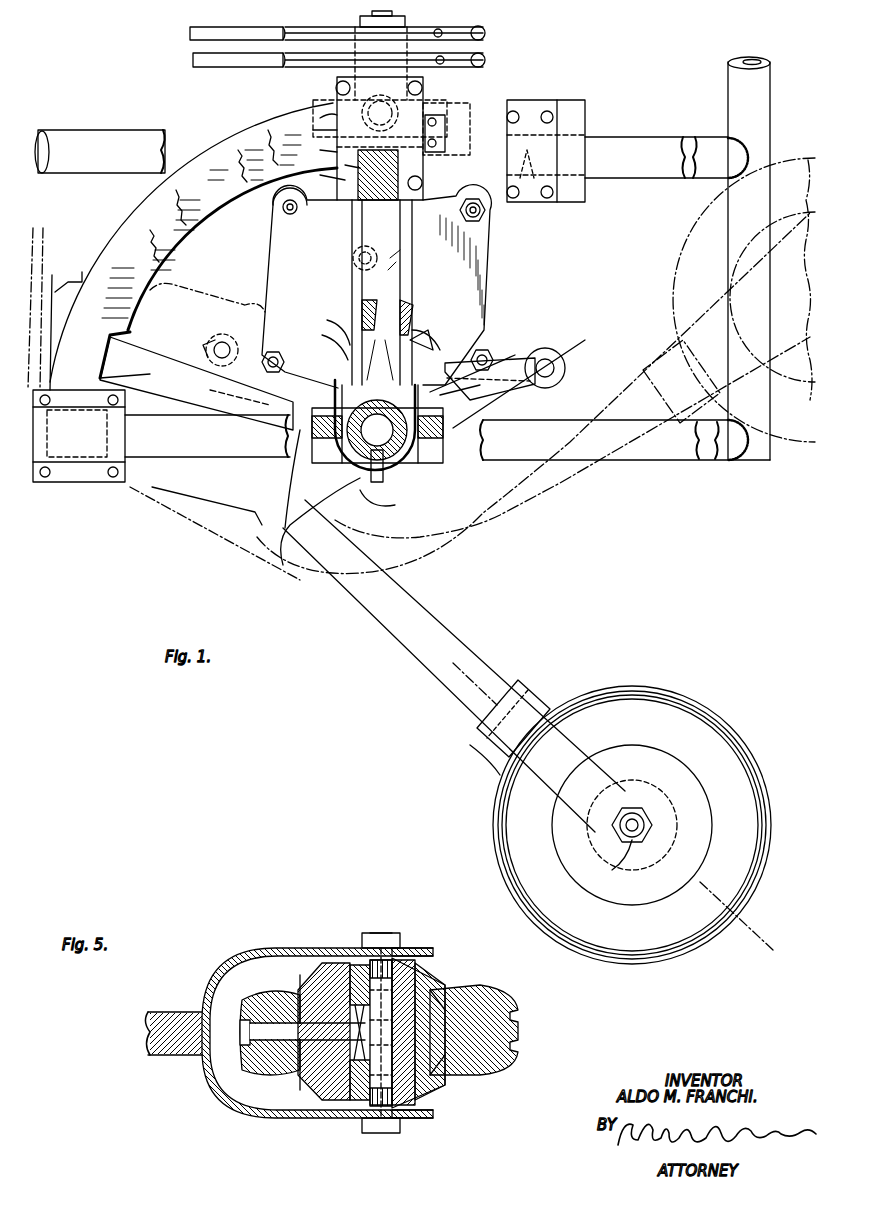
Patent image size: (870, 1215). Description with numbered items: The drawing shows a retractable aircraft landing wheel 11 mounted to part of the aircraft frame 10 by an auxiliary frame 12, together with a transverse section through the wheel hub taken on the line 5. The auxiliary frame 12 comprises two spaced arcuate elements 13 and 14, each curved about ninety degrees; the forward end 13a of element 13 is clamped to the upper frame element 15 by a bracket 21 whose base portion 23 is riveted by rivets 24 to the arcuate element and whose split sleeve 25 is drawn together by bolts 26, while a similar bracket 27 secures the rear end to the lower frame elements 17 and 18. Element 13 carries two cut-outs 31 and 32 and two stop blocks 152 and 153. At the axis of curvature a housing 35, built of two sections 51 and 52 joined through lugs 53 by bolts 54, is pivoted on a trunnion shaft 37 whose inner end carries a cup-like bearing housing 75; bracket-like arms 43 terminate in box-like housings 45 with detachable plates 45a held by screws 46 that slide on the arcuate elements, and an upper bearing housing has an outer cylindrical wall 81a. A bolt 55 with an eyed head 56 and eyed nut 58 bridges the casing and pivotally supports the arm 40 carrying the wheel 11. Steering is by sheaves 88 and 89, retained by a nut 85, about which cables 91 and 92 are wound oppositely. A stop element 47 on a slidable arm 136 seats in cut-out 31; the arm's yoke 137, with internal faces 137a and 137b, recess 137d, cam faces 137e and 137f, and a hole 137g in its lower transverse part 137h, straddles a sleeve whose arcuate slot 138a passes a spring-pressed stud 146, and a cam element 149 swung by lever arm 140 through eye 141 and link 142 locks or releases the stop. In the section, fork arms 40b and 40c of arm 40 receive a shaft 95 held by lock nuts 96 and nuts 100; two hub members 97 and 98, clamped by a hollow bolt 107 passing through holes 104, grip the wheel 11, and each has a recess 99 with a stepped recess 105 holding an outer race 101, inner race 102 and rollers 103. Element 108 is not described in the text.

In FIG. 1, the frame 10 is at (670, 466).
In FIG. 1, the wheel 11 is at (805, 440).
In FIG. 5, the wheel 11 is at (522, 1012).
In FIG. 1, the auxiliary frame 12 is at (134, 205).
In FIG. 1, the arcuate frame element 13 is at (242, 150).
In FIG. 1, the forward end of frame element 13 13a is at (562, 120).
In FIG. 1, the arcuate frame element 14 is at (200, 165).
In FIG. 1, the upper frame element 15 is at (98, 140).
In FIG. 1, the lower frame element 17 is at (176, 467).
In FIG. 1, the lower frame element 18 is at (694, 140).
In FIG. 1, the bracket 21 is at (515, 107).
In FIG. 1, the base portion 23 is at (548, 115).
In FIG. 1, the rivets 24 is at (560, 58).
In FIG. 1, the split sleeve 25 is at (128, 433).
In FIG. 1, the bolts 26 is at (553, 117).
In FIG. 1, the bracket 27 is at (80, 485).
In FIG. 1, the cut-out 31 is at (347, 166).
In FIG. 1, the cut-out 32 is at (108, 352).
In FIG. 1, the housing 35 is at (482, 276).
In FIG. 1, the trunnion shaft 37 is at (340, 365).
In FIG. 1, the arm 40 is at (430, 680).
In FIG. 5, the arm 40 is at (148, 1047).
In FIG. 1, the fork arm 40b is at (478, 750).
In FIG. 5, the fork arm 40b is at (276, 948).
In FIG. 1, the fork arm 40c is at (470, 780).
In FIG. 5, the fork arm 40c is at (278, 1105).
In FIG. 1, the bracket-like arm 43 is at (322, 153).
In FIG. 1, the box-like housing 45 is at (330, 125).
In FIG. 1, the plate part 45a is at (445, 145).
In FIG. 1, the screws 46 is at (337, 82).
In FIG. 1, the stop element 47 is at (320, 176).
In FIG. 1, the casing section 51 is at (486, 300).
In FIG. 1, the casing section 52 is at (285, 281).
In FIG. 1, the lugs 53 is at (285, 262).
In FIG. 1, the bolts 54 is at (282, 215).
In FIG. 1, the bolt 55 is at (406, 310).
In FIG. 1, the bolt head 56 is at (415, 325).
In FIG. 1, the nut 58 is at (376, 303).
In FIG. 1, the bearing housing 75 is at (445, 462).
In FIG. 1, the outer cylindrical wall 81a is at (320, 112).
In FIG. 1, the nut 85 is at (360, 20).
In FIG. 1, the sheave 88 is at (485, 30).
In FIG. 1, the sheave 89 is at (485, 58).
In FIG. 1, the cable 91 is at (190, 33).
In FIG. 1, the cable 92 is at (193, 60).
In FIG. 1, the shaft 95 is at (643, 830).
In FIG. 5, the shaft 95 is at (388, 935).
In FIG. 1, the lock nuts 96 is at (620, 860).
In FIG. 5, the lock nuts 96 is at (395, 934).
In FIG. 1, the hub member 97 is at (695, 818).
In FIG. 5, the hub member 97 is at (440, 1085).
In FIG. 5, the hub member 98 is at (317, 968).
In FIG. 5, the recess 99 is at (418, 972).
In FIG. 5, the nuts 100 is at (395, 952).
In FIG. 5, the outer race 101 is at (433, 988).
In FIG. 5, the inner race 102 is at (400, 960).
In FIG. 5, the rollers 103 is at (352, 965).
In FIG. 5, the hole 104 is at (270, 1033).
In FIG. 5, the recess 105 is at (478, 992).
In FIG. 5, the hollow bolt 107 is at (282, 1010).
In FIG. 5, the pin 108 is at (307, 1033).
In FIG. 1, the slidable arm 136 is at (212, 345).
In FIG. 1, the yoke 137 is at (290, 470).
In FIG. 1, the internal face 137a is at (240, 401).
In FIG. 1, the internal face 137b is at (440, 400).
In FIG. 1, the recess 137d is at (327, 322).
In FIG. 1, the cam face 137e is at (322, 338).
In FIG. 1, the cam face 137f is at (443, 331).
In FIG. 1, the hole 137g is at (398, 475).
In FIG. 1, the lower transverse part 137h is at (316, 536).
In FIG. 1, the arcuate slot 138a is at (372, 508).
In FIG. 1, the lever arm 140 is at (215, 380).
In FIG. 1, the eye 141 is at (353, 256).
In FIG. 1, the link 142 is at (212, 340).
In FIG. 1, the stud 146 is at (386, 498).
In FIG. 1, the cam element 149 is at (410, 365).
In FIG. 1, the stop block 152 is at (458, 108).
In FIG. 1, the stop block 153 is at (79, 436).
In FIG. 1, the section line 5 is at (475, 677).